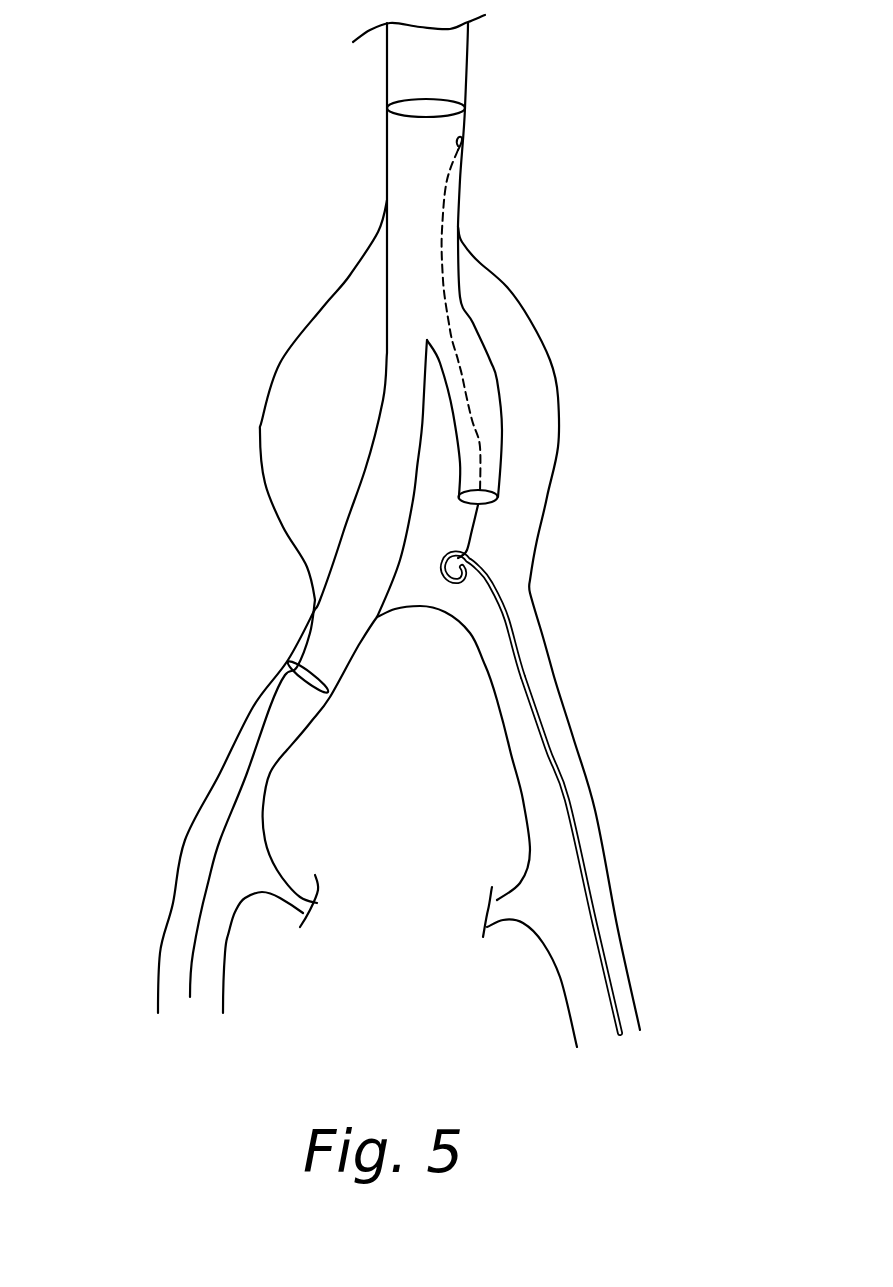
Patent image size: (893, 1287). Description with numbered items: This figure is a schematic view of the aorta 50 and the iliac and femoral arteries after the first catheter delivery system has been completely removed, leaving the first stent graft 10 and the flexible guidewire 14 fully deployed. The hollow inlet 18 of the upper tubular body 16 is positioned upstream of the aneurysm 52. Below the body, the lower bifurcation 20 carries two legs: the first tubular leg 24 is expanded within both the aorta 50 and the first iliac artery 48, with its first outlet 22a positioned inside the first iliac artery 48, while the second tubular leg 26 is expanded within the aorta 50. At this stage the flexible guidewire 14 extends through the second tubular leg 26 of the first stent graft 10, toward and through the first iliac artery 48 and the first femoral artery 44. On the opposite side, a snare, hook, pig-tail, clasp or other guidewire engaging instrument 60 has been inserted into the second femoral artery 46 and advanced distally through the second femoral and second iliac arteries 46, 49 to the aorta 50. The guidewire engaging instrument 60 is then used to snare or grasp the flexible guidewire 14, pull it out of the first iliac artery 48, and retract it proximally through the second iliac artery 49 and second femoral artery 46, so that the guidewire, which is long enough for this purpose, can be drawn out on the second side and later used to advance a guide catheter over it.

The first stent graft 10 is at (413, 316).
The flexible guidewire 14 is at (477, 533).
The upper tubular body 16 is at (413, 160).
The hollow inlet 18 is at (427, 110).
The lower bifurcation 20 is at (430, 333).
The first outlet 22a is at (307, 677).
The first tubular leg 24 is at (337, 633).
The second tubular leg 26 is at (477, 367).
The first femoral artery 44 is at (173, 942).
The second femoral artery 46 is at (618, 958).
The first iliac artery 48 is at (273, 702).
The second iliac artery 49 is at (533, 667).
The aorta 50 is at (320, 518).
The aneurysm 52 is at (557, 380).
The guidewire engaging instrument 60 is at (567, 800).